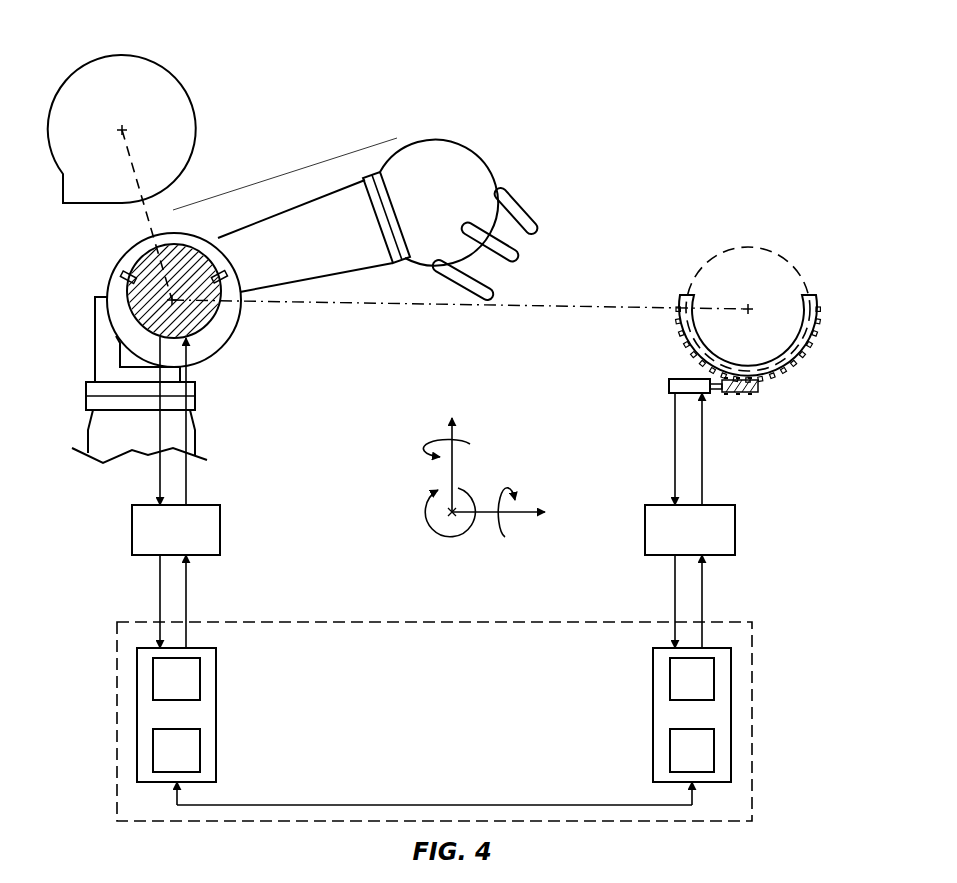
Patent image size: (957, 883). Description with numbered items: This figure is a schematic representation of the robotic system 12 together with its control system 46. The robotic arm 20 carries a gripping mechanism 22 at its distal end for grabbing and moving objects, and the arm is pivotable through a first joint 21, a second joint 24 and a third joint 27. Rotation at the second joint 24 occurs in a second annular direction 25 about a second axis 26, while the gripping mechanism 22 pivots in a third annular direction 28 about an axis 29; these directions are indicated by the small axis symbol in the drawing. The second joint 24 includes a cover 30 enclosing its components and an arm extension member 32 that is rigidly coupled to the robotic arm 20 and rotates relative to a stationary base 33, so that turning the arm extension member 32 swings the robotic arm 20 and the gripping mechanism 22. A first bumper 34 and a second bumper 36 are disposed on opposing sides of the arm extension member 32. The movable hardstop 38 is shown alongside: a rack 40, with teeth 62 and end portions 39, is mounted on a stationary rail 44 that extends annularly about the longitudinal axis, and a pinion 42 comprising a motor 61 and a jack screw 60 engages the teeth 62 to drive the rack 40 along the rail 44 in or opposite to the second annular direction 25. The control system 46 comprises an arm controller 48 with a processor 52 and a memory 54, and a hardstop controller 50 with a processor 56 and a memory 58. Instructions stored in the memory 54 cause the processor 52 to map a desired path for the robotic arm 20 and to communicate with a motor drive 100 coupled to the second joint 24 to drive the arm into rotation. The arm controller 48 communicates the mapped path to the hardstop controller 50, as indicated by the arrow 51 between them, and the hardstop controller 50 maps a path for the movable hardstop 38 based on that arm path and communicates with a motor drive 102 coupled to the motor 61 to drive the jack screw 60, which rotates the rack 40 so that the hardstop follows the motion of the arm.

The robotic system 12 is at (328, 118).
The robotic arm 20 is at (292, 166).
The first joint 21 is at (195, 396).
The gripping mechanism 22 is at (489, 140).
The second joint 24 is at (172, 200).
The second annular direction 25 is at (447, 535).
The second axis 26 is at (427, 514).
The third joint 27 is at (403, 265).
The third annular direction 28 is at (512, 490).
The axis 29 is at (527, 522).
The cover 30 is at (187, 97).
The arm extension member 32 is at (180, 300).
The stationary base 33 is at (115, 292).
The first bumper 34 is at (233, 277).
The second bumper 36 is at (125, 275).
The movable hardstop 38 is at (828, 288).
The end of ring segment 39 is at (685, 295).
The rack 40 is at (806, 350).
The pinion 42 is at (683, 375).
The rail 44 is at (727, 252).
The control system 46 is at (440, 622).
The arm controller 48 is at (216, 712).
The hardstop controller 50 is at (653, 700).
The communication link 51 is at (440, 805).
The processor 52 is at (200, 678).
The memory 54 is at (200, 748).
The processor 56 is at (670, 680).
The memory 58 is at (670, 750).
The jack screw 60 is at (737, 395).
The motor 61 is at (670, 386).
The teeth 62 is at (822, 312).
The motor drive 100 is at (221, 530).
The motor drive 102 is at (736, 530).